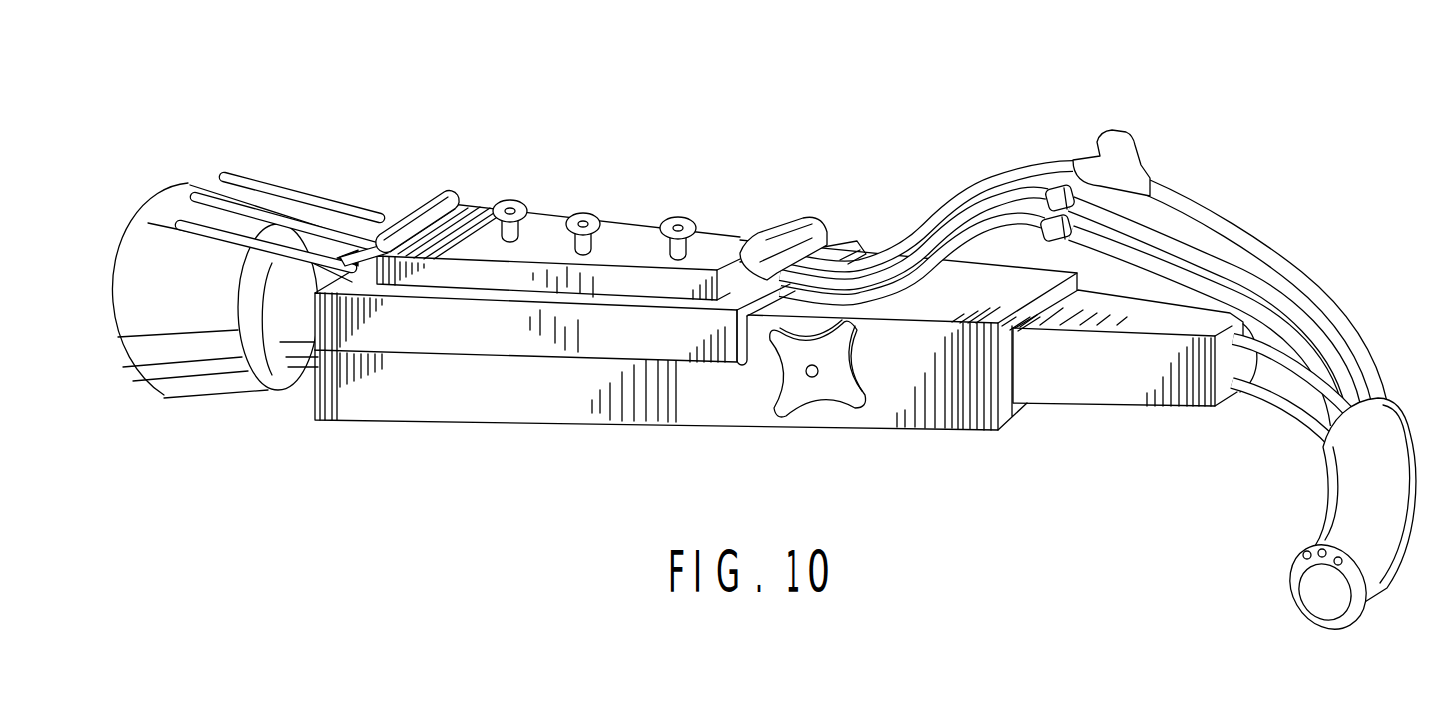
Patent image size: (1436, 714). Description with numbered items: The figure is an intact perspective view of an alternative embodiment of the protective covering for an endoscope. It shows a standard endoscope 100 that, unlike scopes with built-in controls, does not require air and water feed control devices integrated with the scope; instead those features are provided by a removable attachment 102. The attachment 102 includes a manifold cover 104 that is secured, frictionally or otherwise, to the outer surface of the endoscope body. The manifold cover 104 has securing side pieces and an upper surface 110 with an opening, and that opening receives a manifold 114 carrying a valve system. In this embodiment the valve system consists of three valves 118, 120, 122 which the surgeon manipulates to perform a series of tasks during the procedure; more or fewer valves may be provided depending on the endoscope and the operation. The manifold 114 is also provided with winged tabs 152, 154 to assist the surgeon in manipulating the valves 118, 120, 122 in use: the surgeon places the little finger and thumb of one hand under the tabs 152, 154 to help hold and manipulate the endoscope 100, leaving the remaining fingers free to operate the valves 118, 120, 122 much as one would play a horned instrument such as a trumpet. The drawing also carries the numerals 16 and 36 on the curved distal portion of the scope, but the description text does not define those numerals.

The handle end / mouthpiece 16 is at (1325, 603).
The handle 36 is at (1350, 490).
The endoscope 100 is at (517, 410).
The attachment 102 is at (390, 192).
The manifold cover 104 is at (452, 338).
The upper surface 110 is at (338, 277).
The manifold 114 is at (548, 208).
The valve 118 is at (517, 205).
The valve 120 is at (592, 210).
The valve 122 is at (687, 215).
The winged tab 152 is at (433, 197).
The winged tab 154 is at (813, 230).